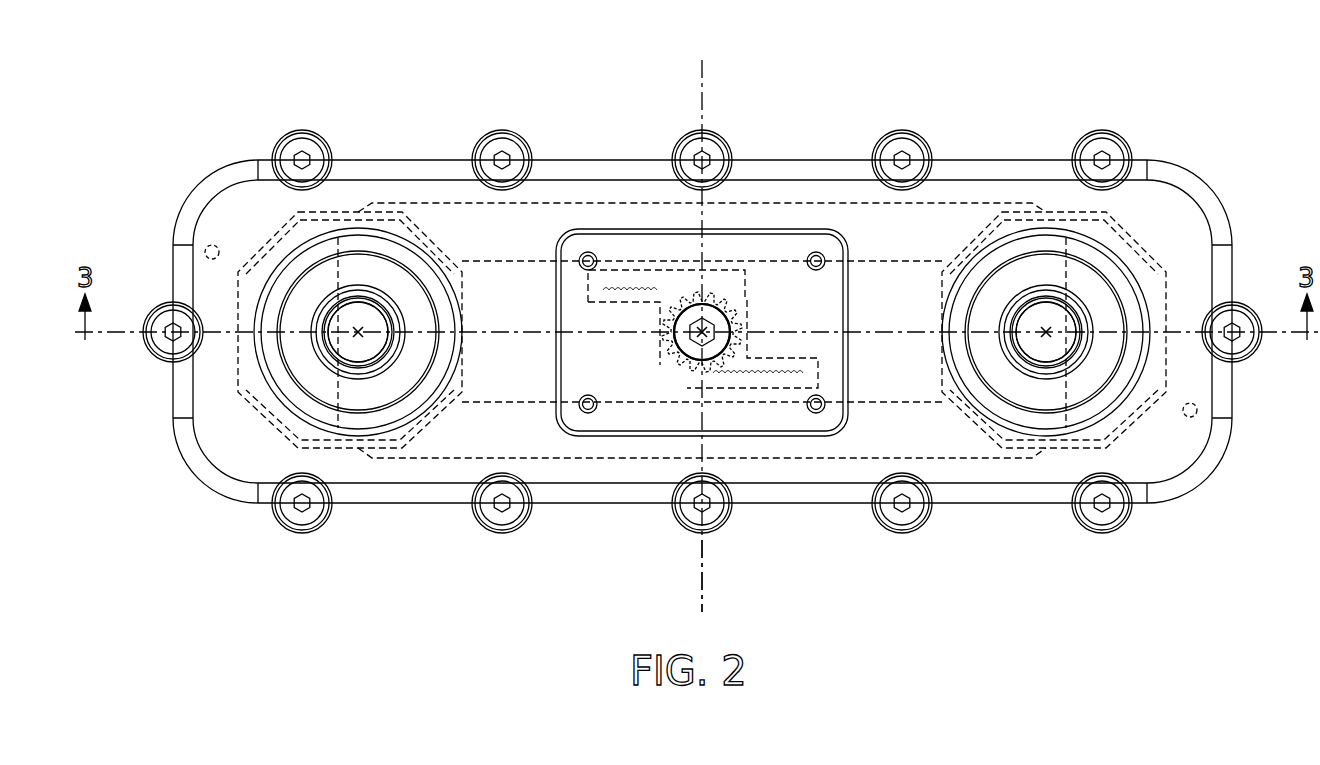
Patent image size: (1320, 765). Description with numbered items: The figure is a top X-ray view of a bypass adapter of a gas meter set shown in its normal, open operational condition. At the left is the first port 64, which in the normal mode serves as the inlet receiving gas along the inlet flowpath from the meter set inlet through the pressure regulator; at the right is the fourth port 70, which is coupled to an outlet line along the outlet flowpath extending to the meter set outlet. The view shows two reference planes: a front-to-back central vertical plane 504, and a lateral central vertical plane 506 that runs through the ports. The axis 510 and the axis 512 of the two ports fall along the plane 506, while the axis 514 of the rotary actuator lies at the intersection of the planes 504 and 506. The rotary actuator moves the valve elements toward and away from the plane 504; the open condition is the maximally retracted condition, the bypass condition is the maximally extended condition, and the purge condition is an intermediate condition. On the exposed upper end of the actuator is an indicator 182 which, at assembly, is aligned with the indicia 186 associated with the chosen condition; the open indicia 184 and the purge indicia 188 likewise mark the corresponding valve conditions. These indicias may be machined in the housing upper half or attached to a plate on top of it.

The first port 64 is at (368, 312).
The fourth port 70 is at (1044, 312).
The indicator 182 is at (680, 356).
The open position indicator 184 is at (642, 393).
The indicia 186 is at (742, 265).
The purge indicia 188 is at (598, 335).
The front-to-back central vertical plane 504 is at (705, 572).
The lateral central vertical plane 506 is at (1190, 333).
The axis 510 is at (358, 338).
The axis 512 is at (1046, 336).
The axis of the rotary actuator 514 is at (706, 352).